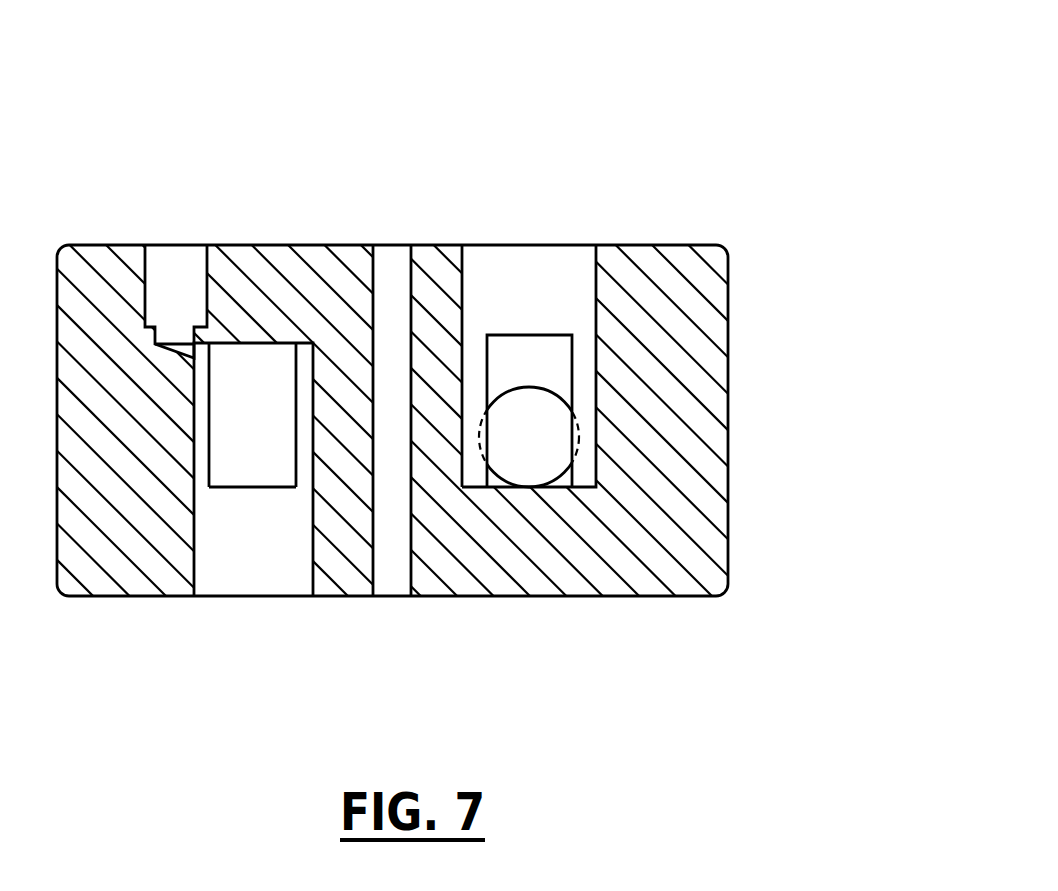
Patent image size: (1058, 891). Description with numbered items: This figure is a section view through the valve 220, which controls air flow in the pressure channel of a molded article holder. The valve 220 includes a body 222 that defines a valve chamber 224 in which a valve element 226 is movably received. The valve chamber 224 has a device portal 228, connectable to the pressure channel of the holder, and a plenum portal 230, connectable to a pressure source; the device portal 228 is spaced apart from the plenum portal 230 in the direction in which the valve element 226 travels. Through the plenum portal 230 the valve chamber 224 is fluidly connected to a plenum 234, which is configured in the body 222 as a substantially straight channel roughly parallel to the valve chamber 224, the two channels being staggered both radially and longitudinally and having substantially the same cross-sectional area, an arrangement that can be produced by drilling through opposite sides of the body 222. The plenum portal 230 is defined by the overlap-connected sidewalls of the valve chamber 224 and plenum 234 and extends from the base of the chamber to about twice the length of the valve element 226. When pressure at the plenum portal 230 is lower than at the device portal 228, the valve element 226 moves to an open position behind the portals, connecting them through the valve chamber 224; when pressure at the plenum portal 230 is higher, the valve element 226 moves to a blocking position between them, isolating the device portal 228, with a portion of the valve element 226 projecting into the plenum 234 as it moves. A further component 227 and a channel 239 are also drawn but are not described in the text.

The valve 220 is at (623, 143).
The body 222 is at (705, 281).
The valve chamber 224 is at (493, 302).
The valve element 226 is at (495, 457).
The insert 227 is at (148, 277).
The device portal 228 is at (470, 249).
The plenum portal 230 is at (221, 463).
The plenum 234 is at (221, 577).
The channel 239 is at (392, 580).